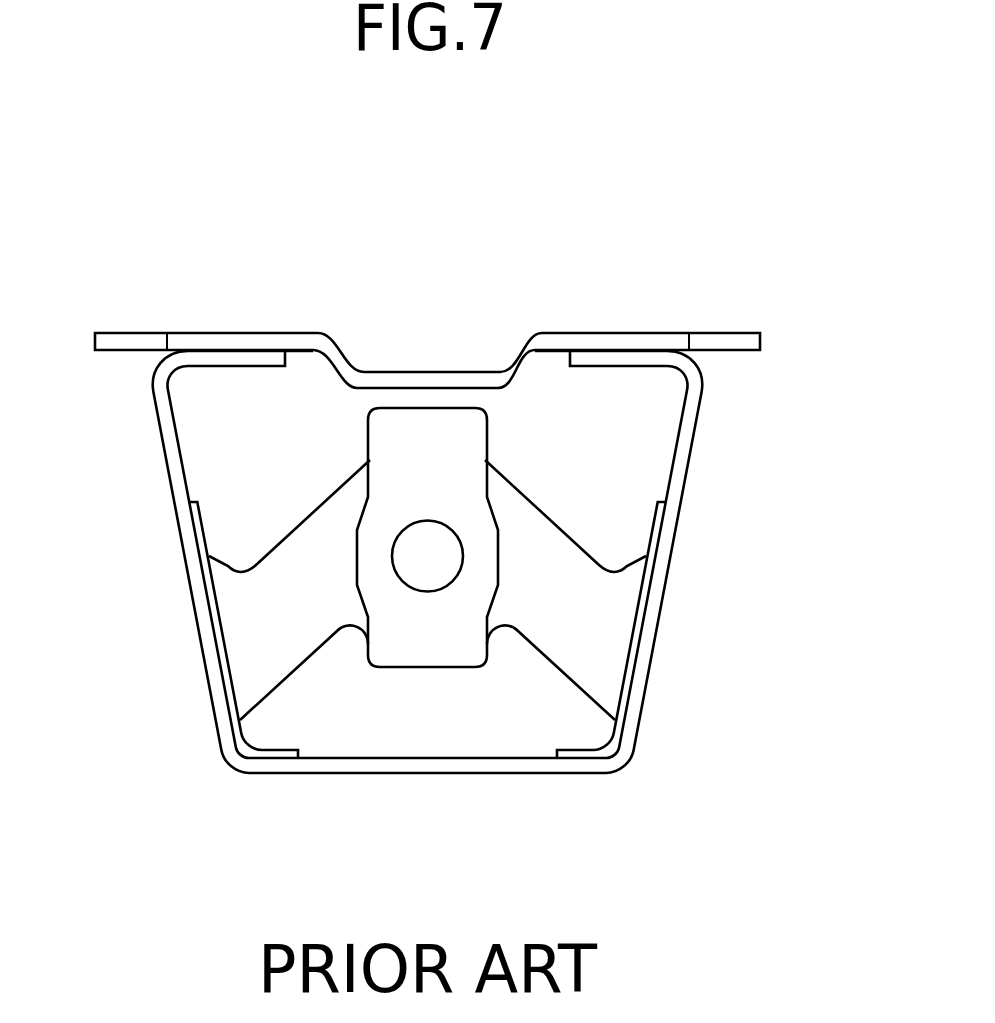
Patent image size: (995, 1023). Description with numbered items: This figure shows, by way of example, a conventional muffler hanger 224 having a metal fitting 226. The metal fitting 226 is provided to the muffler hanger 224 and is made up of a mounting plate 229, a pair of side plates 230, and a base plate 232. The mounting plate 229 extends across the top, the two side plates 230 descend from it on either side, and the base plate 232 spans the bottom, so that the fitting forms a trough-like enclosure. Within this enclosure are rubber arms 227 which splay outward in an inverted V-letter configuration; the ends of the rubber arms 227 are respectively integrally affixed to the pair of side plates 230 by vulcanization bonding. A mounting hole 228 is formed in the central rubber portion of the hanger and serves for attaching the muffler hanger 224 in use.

The muffler hanger 224 is at (731, 460).
The metal fitting 226 is at (695, 489).
The rubber arms 227 is at (521, 474).
The mounting hole 228 is at (436, 574).
The mounting plate 229 is at (227, 340).
The side plates 230 is at (197, 556).
The base plate 232 is at (564, 763).